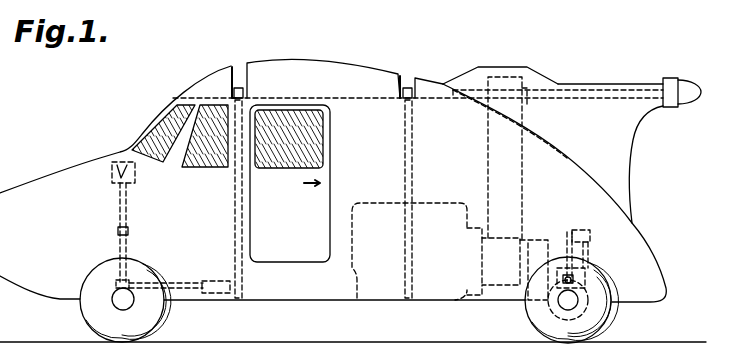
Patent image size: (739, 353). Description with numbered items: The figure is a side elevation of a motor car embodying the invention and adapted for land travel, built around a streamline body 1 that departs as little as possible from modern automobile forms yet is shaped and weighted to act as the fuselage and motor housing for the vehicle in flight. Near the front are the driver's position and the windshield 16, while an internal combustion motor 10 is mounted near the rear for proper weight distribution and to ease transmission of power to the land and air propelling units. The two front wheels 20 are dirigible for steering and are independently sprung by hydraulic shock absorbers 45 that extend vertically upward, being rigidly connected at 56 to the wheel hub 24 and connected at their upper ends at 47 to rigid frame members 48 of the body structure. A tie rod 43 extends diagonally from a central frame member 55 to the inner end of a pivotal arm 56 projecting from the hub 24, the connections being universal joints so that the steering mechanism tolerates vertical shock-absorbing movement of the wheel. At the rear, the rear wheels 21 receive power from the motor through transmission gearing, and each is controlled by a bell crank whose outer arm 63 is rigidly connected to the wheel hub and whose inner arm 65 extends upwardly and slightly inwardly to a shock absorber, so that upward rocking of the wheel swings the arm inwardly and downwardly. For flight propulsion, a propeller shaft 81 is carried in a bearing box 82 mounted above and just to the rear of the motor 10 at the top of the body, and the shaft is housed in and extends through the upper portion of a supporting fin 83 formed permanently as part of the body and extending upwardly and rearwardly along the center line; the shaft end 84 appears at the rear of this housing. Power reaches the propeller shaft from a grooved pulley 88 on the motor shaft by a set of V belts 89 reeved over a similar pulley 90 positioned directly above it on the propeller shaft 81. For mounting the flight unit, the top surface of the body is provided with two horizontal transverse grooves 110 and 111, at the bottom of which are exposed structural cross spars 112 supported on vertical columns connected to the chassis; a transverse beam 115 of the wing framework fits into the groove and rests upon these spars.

The streamline body 1 is at (62, 176).
The windshield 16 is at (160, 128).
The transverse groove 110 is at (234, 68).
The transverse groove 111 is at (403, 75).
The structural cross spars 112 is at (244, 93).
The transverse beam 115 is at (236, 198).
The internal combustion motor 10 is at (426, 203).
The pulley 90 is at (486, 82).
The bearing box 82 is at (536, 80).
The propeller shaft 81 is at (597, 95).
The tube end cap 84 is at (689, 88).
The supporting fin 83 is at (600, 154).
The V belts 89 is at (510, 172).
The grooved pulley 88 is at (505, 236).
The outer arm of bell crank 63 is at (562, 257).
The inner arm of bell crank 65 is at (585, 250).
The upper connection of shock absorber 47 is at (136, 181).
The rigid frame members 48 is at (112, 178).
The hydraulic shock absorbers 45 is at (119, 243).
The pivotal arms 56 is at (116, 284).
The wheel hub 24 is at (112, 297).
The front wheels 20 is at (92, 308).
The tie rod 43 is at (178, 283).
The central frame member 55 is at (225, 295).
The rear wheels 21 is at (593, 312).